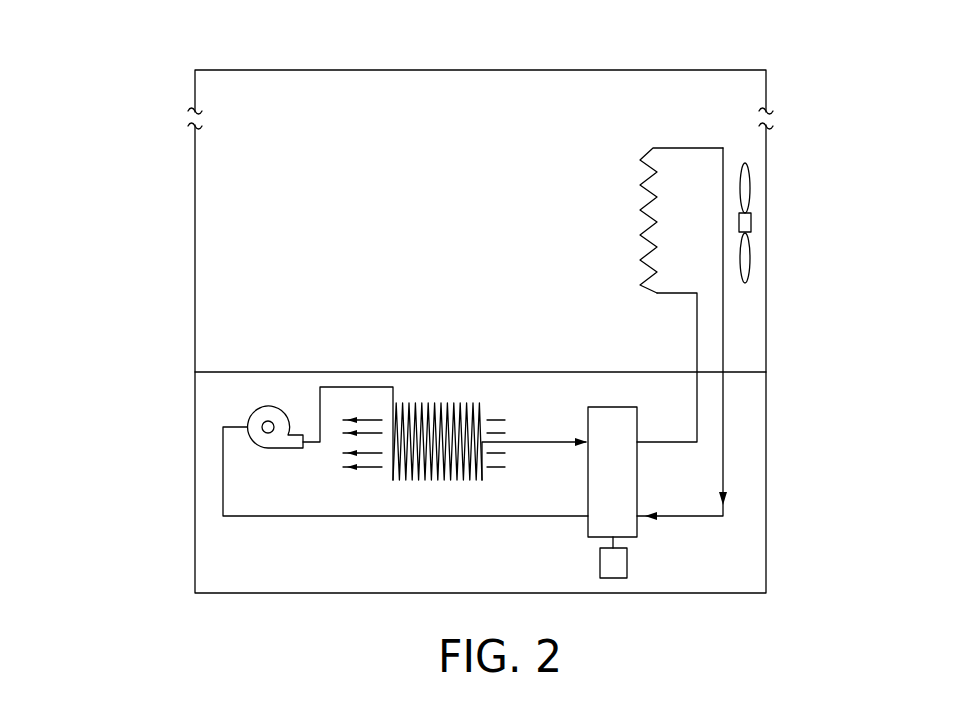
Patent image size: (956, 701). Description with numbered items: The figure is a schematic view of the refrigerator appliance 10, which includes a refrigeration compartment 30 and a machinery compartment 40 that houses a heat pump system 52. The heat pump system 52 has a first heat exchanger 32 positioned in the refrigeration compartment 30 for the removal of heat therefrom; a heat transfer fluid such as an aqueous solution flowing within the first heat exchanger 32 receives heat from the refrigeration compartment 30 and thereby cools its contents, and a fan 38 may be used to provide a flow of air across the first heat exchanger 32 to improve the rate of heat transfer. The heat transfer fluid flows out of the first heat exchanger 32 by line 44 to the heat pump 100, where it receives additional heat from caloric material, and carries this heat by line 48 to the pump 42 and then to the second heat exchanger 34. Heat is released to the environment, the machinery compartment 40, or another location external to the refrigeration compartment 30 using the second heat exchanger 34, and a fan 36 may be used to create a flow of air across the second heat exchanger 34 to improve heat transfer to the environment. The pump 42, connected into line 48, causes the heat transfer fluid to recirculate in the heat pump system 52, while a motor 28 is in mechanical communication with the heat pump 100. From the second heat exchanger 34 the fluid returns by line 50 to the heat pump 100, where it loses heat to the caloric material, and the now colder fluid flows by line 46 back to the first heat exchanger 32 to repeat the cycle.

The refrigerator appliance 10 is at (130, 168).
The motor 28 is at (598, 563).
The refrigeration compartment 30 is at (475, 108).
The first heat exchanger 32 is at (643, 192).
The second heat exchanger 34 is at (452, 403).
The fan 36 is at (372, 419).
The fan 38 is at (750, 192).
The machinery compartment 40 is at (226, 402).
The pump 42 is at (255, 412).
The line 44 is at (723, 340).
The line 46 is at (697, 337).
The line 48 is at (322, 438).
The line 50 is at (521, 440).
The heat pump system 52 is at (411, 360).
The heat pump 100 is at (612, 407).